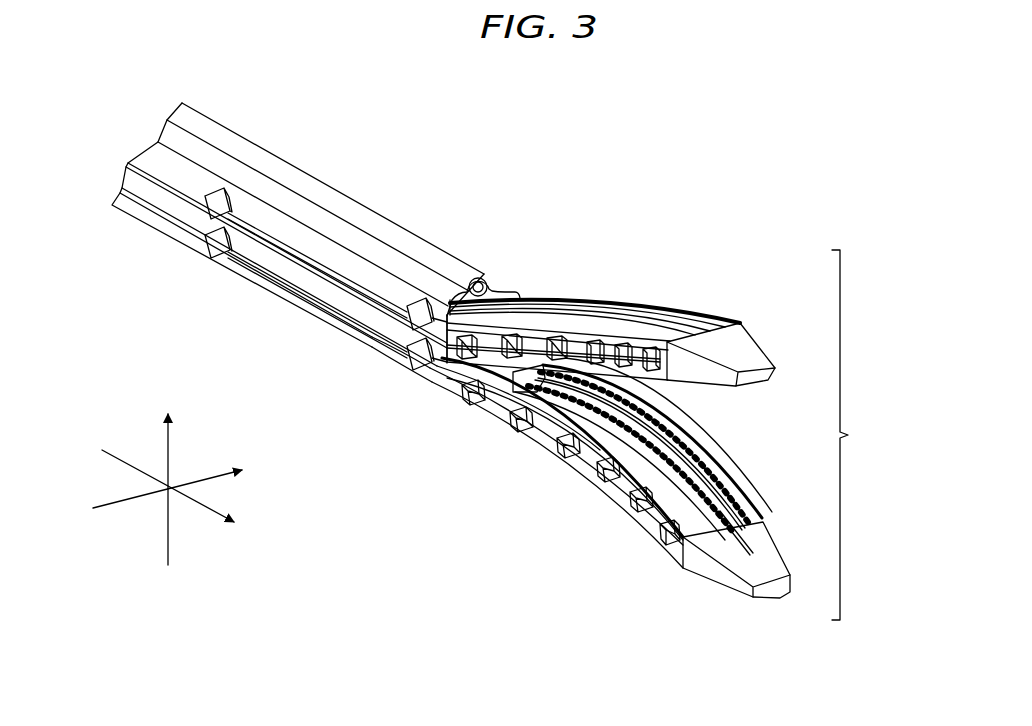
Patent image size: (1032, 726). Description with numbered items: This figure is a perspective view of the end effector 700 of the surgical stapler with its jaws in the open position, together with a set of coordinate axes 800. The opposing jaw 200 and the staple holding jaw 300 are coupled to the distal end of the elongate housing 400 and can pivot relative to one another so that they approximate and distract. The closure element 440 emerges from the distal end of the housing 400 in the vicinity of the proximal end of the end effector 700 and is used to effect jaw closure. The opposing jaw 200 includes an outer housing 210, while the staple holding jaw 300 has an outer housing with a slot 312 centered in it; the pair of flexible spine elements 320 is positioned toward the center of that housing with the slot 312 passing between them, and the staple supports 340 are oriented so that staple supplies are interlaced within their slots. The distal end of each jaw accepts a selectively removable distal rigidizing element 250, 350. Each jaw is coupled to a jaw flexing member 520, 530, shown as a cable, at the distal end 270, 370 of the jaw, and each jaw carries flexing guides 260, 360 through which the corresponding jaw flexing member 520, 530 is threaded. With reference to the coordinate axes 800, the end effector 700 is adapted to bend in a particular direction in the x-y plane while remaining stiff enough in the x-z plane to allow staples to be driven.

The opposing jaw 200 is at (676, 220).
The outer housing 210 is at (688, 310).
The distal rigidizing element 250 is at (735, 343).
The flexing guides 260 is at (560, 340).
The distal end 270 is at (702, 397).
The staple holding jaw 300 is at (618, 600).
The slot 312 is at (737, 538).
The flexible spine elements 320 is at (606, 468).
The staple supports 340 is at (642, 502).
The distal rigidizing element 350 is at (762, 572).
The flexing guides 360 is at (565, 448).
The distal end 370 is at (712, 597).
The elongate housing 400 is at (250, 134).
The closure element 440 is at (490, 280).
The jaw flexing member 520 is at (292, 258).
The jaw flexing member 530 is at (350, 327).
The end effector 700 is at (865, 435).
The coordinate axes 800 is at (118, 556).